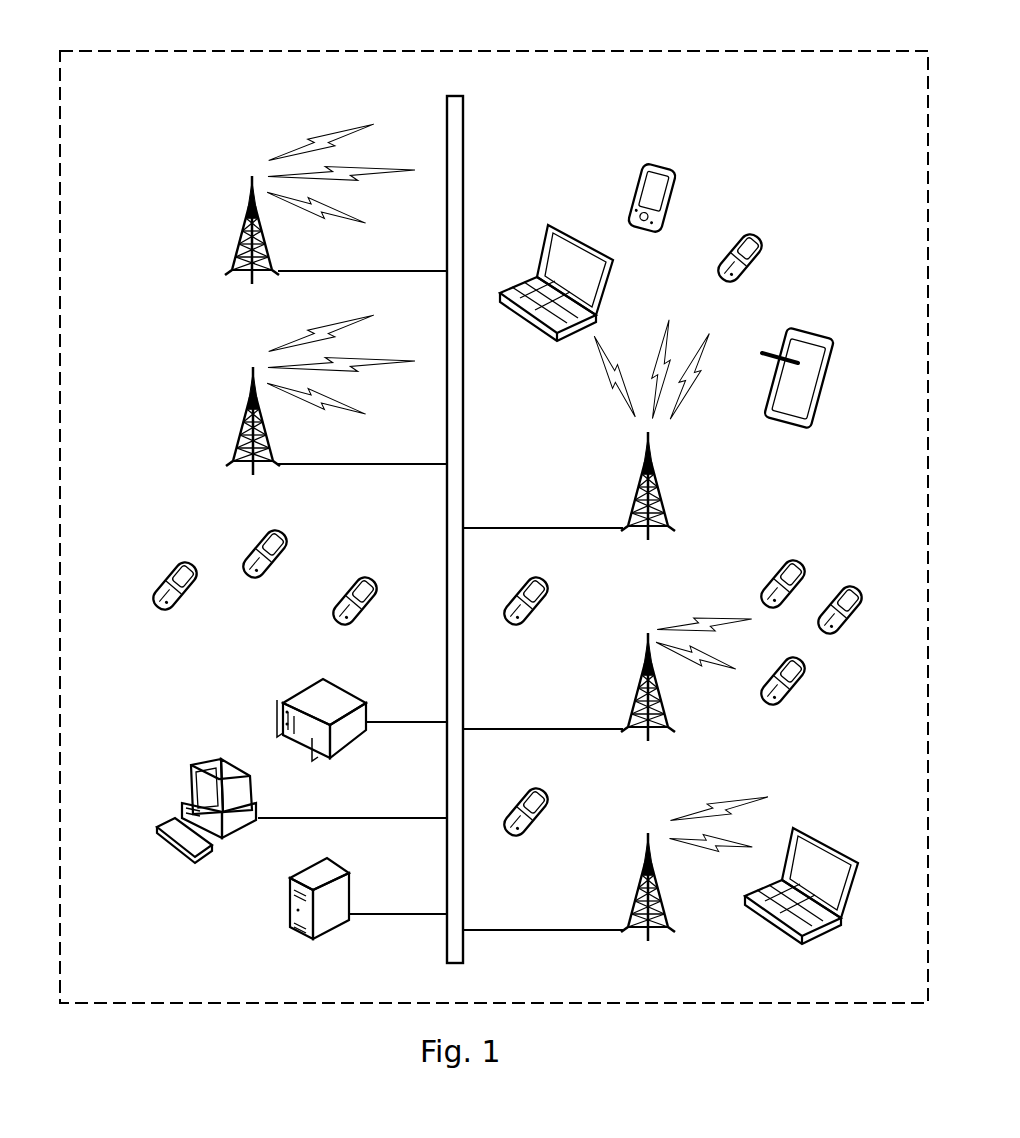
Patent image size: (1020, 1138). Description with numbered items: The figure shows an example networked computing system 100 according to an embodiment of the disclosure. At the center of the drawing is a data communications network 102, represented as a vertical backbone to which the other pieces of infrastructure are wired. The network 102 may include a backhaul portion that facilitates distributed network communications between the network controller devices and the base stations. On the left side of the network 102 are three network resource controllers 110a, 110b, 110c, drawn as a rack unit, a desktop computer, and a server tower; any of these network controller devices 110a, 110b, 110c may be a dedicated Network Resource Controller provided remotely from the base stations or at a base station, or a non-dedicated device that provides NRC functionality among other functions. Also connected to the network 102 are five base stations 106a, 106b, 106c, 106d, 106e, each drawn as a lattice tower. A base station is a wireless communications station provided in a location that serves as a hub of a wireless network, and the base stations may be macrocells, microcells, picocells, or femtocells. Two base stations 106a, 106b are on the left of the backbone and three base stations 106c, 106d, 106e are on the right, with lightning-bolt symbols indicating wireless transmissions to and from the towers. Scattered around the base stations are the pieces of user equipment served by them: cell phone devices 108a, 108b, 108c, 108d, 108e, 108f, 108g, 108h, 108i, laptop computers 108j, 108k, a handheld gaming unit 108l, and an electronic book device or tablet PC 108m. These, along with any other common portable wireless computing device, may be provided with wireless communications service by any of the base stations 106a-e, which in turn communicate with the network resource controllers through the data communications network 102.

The networked computing system 100 is at (350, 22).
The data communications network 102 is at (446, 110).
The base station 106a is at (244, 225).
The base station 106b is at (244, 418).
The base station 106c is at (632, 874).
The base station 106d is at (634, 684).
The base station 106e is at (660, 500).
The cell phone device 108a is at (160, 580).
The cell phone device 108b is at (258, 538).
The cell phone device 108c is at (340, 628).
The cell phone device 108d is at (554, 794).
The cell phone device 108e is at (796, 700).
The cell phone device 108f is at (858, 624).
The cell phone device 108g is at (806, 562).
The cell phone device 108h is at (554, 585).
The cell phone device 108i is at (770, 240).
The laptop computer 108j is at (826, 840).
The laptop computer 108k is at (550, 225).
The handheld gaming unit 108l is at (674, 184).
The electronic book device or tablet PC 108m is at (832, 346).
The network resource controller 110a is at (272, 718).
The network resource controller 110b is at (188, 768).
The network resource controller 110c is at (290, 918).